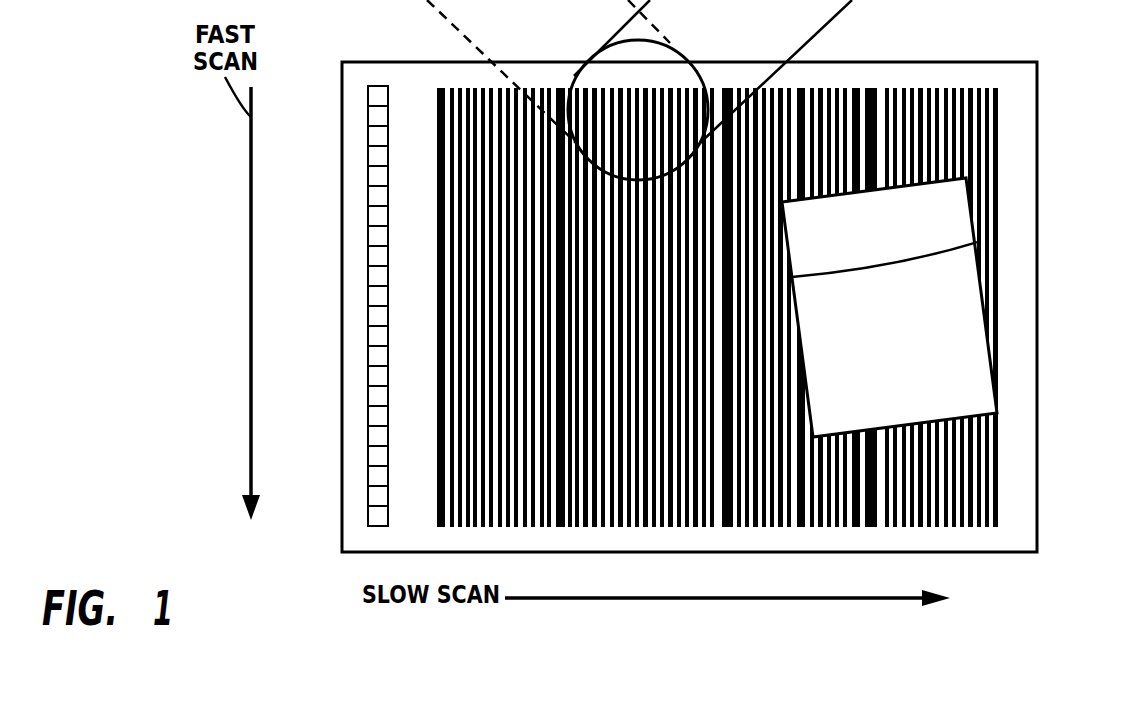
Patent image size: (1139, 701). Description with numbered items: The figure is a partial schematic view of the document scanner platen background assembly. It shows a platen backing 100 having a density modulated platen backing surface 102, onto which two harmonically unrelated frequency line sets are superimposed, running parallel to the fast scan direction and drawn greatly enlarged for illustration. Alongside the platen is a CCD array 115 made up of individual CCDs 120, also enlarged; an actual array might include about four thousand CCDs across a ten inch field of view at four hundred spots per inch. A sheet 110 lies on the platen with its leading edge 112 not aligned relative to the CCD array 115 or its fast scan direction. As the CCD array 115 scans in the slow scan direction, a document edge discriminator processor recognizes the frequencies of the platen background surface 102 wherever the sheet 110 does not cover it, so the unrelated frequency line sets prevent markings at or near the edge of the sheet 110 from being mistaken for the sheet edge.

The platen backing 100 is at (955, 19).
The density modulated platen backing surface 102 is at (937, 90).
The sheet 110 is at (975, 380).
The leading edge 112 is at (977, 242).
The CCD array 115 is at (353, 441).
The individual CCDs 120 is at (377, 87).